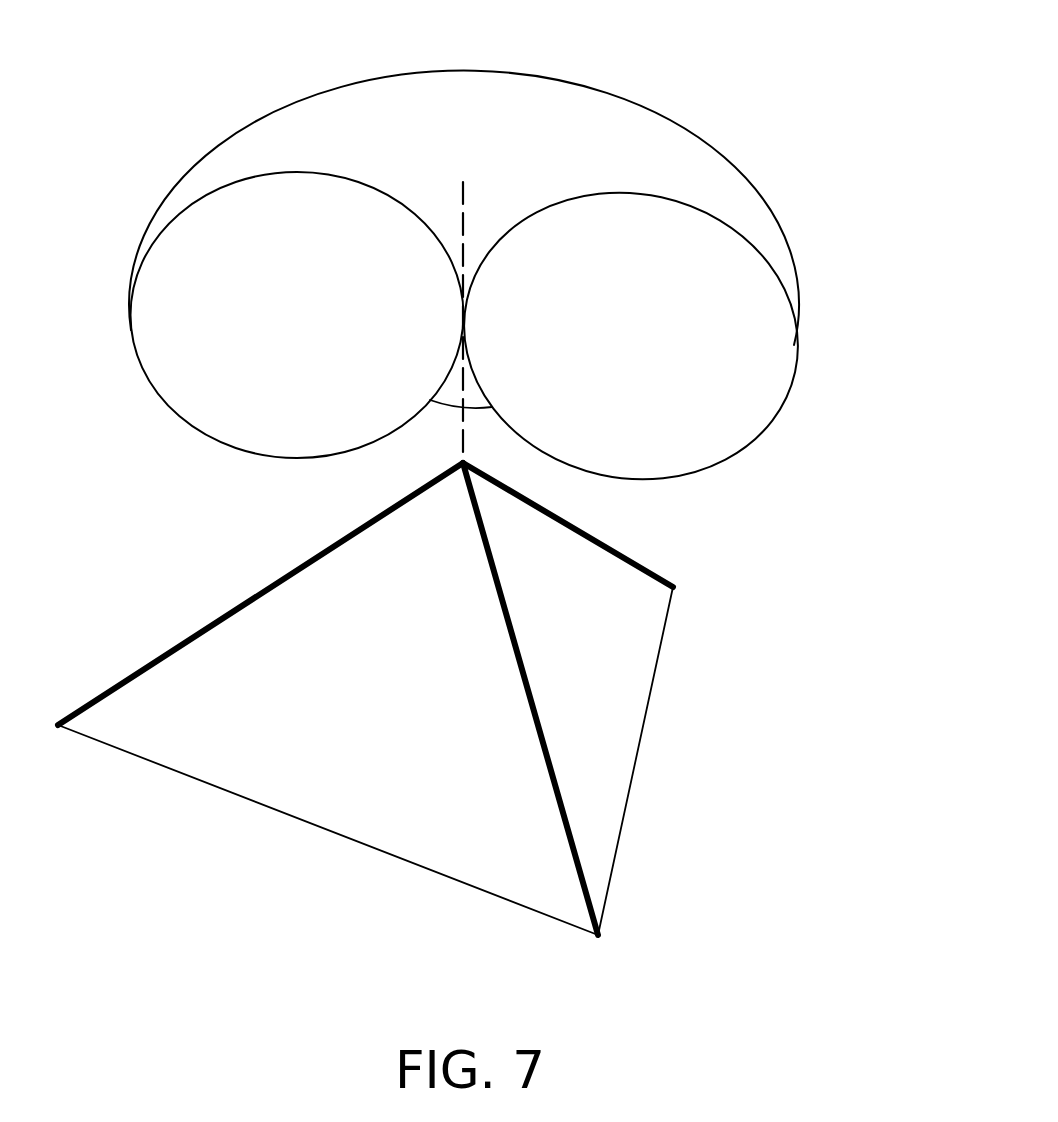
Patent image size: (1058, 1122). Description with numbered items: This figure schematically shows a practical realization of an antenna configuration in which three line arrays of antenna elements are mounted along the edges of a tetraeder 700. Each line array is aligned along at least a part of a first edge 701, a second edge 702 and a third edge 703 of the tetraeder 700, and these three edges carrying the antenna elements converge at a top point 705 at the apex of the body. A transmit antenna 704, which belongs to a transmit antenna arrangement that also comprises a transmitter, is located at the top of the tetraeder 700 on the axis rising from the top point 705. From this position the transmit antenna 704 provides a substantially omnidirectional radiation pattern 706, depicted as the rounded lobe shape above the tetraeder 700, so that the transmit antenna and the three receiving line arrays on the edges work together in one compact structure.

The tetraeder 700 is at (763, 682).
The first edge 701 is at (636, 560).
The second edge 702 is at (564, 795).
The third edge 703 is at (186, 641).
The transmit antenna 704 is at (468, 193).
The top point 705 is at (460, 462).
The omnidirectional radiation pattern 706 is at (727, 383).